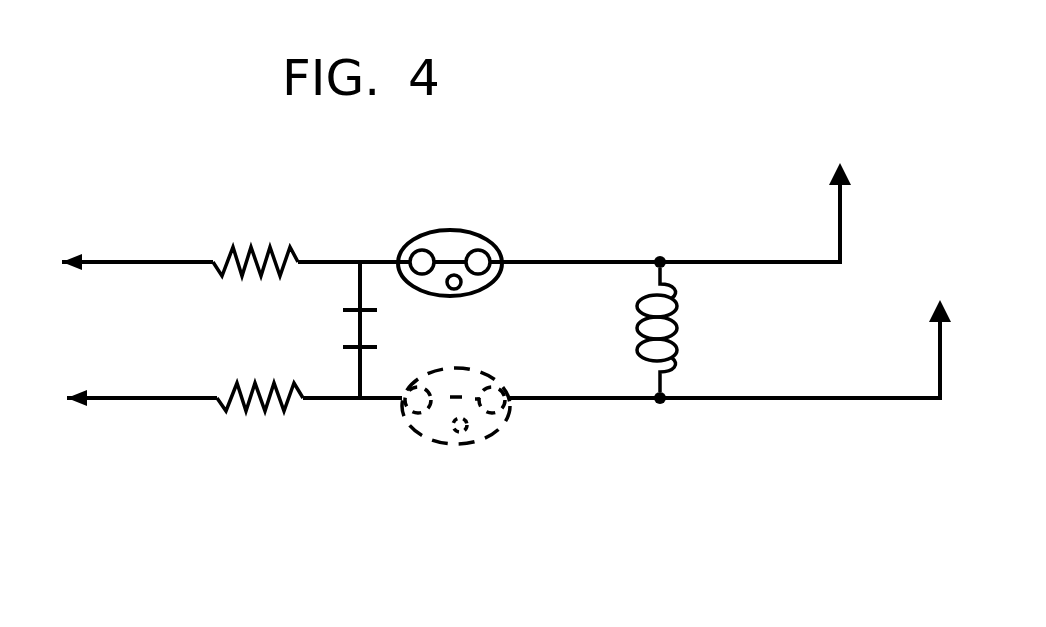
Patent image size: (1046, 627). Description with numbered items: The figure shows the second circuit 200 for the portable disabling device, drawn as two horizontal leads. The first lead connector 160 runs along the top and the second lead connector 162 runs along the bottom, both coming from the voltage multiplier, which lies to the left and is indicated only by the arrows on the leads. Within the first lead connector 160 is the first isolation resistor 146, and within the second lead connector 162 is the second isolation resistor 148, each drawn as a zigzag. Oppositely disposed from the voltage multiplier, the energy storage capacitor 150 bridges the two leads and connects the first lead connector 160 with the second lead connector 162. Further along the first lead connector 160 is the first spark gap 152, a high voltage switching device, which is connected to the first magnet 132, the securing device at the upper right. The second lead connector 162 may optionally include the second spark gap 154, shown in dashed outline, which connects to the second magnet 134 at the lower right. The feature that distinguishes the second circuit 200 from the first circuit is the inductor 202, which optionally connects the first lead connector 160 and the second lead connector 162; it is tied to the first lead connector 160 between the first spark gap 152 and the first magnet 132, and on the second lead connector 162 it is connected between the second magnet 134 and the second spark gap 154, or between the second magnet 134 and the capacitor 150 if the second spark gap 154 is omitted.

The first magnet 132 is at (838, 212).
The second magnet 134 is at (938, 345).
The first isolation resistor 146 is at (272, 252).
The second isolation resistor 148 is at (287, 408).
The energy storage capacitor 150 is at (380, 333).
The first spark gap 152 is at (453, 230).
The second spark gap 154 is at (447, 460).
The first lead connector 160 is at (153, 260).
The second lead connector 162 is at (162, 396).
The second circuit 200 is at (378, 478).
The inductor 202 is at (678, 335).